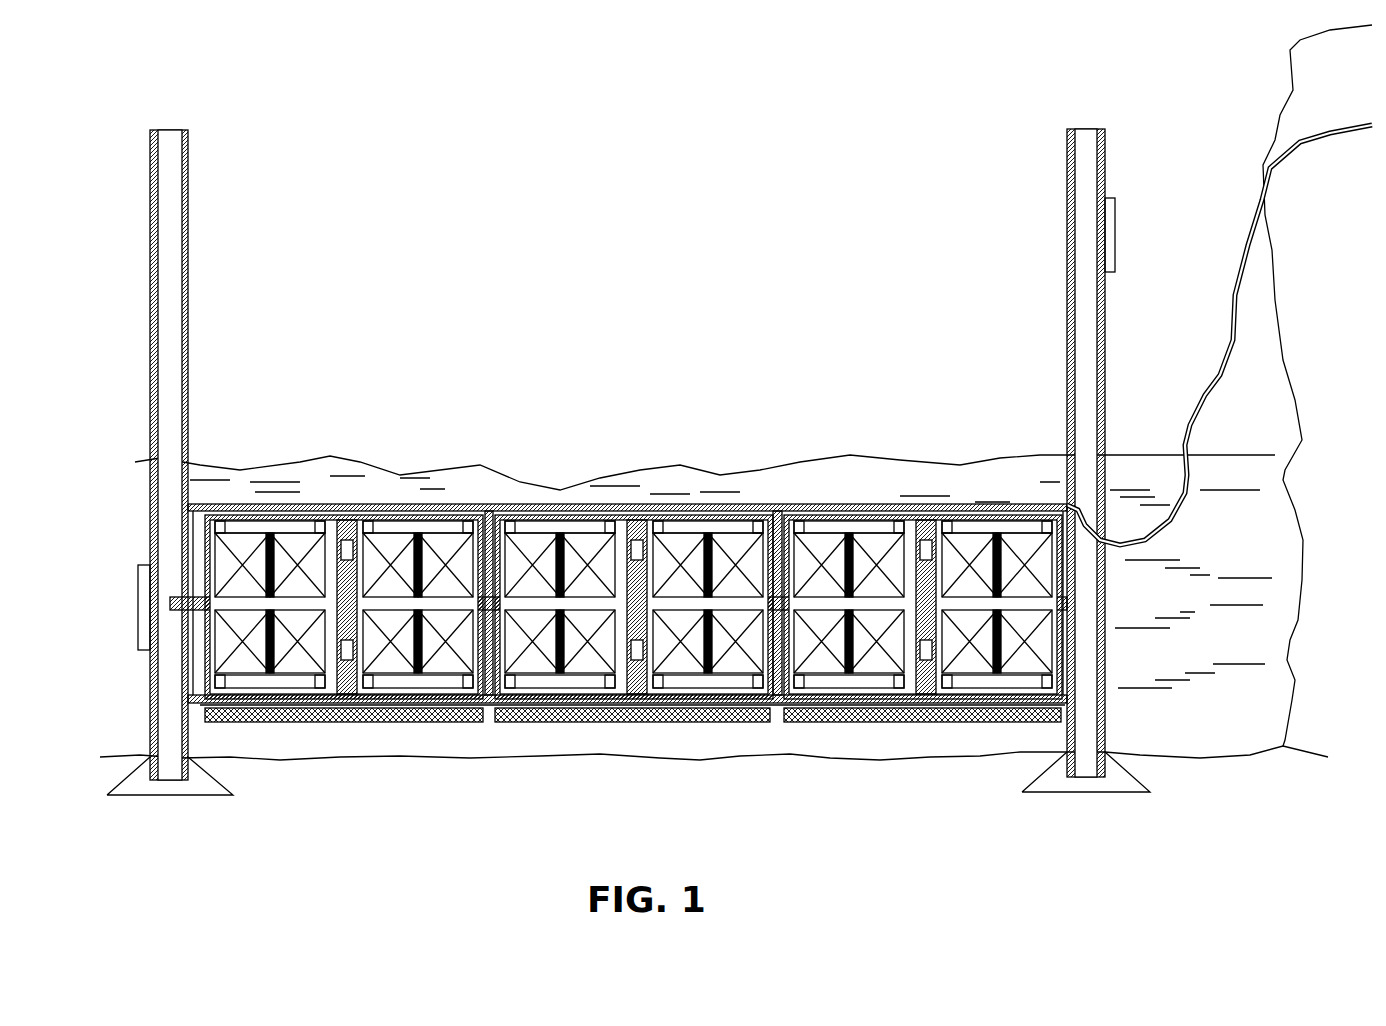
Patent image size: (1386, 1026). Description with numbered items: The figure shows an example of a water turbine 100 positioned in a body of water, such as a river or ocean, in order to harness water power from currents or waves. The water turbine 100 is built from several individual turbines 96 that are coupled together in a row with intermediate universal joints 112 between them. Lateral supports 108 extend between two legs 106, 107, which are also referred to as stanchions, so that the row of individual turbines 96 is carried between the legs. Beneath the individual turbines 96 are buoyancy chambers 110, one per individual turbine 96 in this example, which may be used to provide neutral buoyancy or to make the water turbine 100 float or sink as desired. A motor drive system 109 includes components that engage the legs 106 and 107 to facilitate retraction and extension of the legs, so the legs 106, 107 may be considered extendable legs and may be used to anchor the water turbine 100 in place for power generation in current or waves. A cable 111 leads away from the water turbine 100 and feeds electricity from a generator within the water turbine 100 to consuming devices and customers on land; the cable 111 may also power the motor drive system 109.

The water turbine 100 is at (717, 427).
The individual turbines 96 is at (390, 538).
The leg 106 is at (188, 228).
The leg 107 is at (1065, 190).
The lateral supports 108 is at (573, 505).
The motor drive system 109 is at (138, 612).
The buoyancy chambers 110 is at (356, 723).
The cable 111 is at (1230, 340).
The universal joints 112 is at (486, 505).